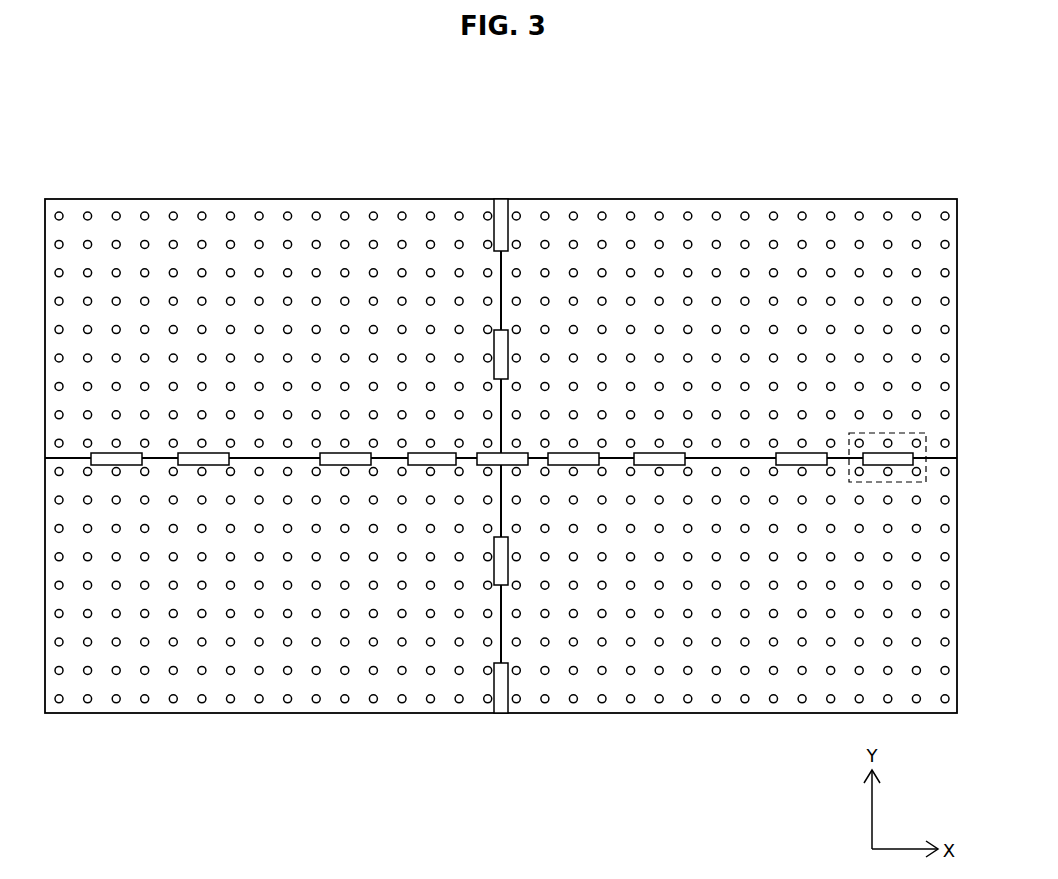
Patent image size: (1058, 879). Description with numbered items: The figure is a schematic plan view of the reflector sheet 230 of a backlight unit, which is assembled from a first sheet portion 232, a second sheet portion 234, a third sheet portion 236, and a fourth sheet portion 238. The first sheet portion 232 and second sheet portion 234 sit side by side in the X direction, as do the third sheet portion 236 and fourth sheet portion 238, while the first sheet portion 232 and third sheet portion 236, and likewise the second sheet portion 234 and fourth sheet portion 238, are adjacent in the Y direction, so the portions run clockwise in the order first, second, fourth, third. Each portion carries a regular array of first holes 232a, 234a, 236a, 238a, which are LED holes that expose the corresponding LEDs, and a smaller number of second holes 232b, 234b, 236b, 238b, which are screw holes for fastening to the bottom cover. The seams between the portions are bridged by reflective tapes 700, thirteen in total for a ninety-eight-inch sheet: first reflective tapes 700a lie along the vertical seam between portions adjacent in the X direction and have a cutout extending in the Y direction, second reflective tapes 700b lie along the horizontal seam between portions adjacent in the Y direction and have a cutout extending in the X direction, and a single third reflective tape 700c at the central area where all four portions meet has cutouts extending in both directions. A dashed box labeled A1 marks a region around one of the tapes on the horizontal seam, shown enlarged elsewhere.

The reflector sheet 230 is at (504, 146).
The first sheet portion 232 is at (275, 220).
The first holes 232a is at (375, 210).
The second holes 232b is at (163, 211).
The second sheet portion 234 is at (730, 222).
The first holes 234a is at (832, 210).
The second holes 234b is at (622, 211).
The third sheet portion 236 is at (273, 693).
The first holes 236a is at (374, 706).
The second holes 236b is at (163, 703).
The fourth sheet portion 238 is at (743, 677).
The first holes 238a is at (804, 708).
The second holes 238b is at (612, 703).
The reflective tapes 700 is at (483, 525).
The first reflective tapes 700a is at (500, 713).
The second reflective tapes 700b is at (103, 466).
The third reflective tape 700c is at (488, 463).
The enlarged region A1 is at (903, 433).